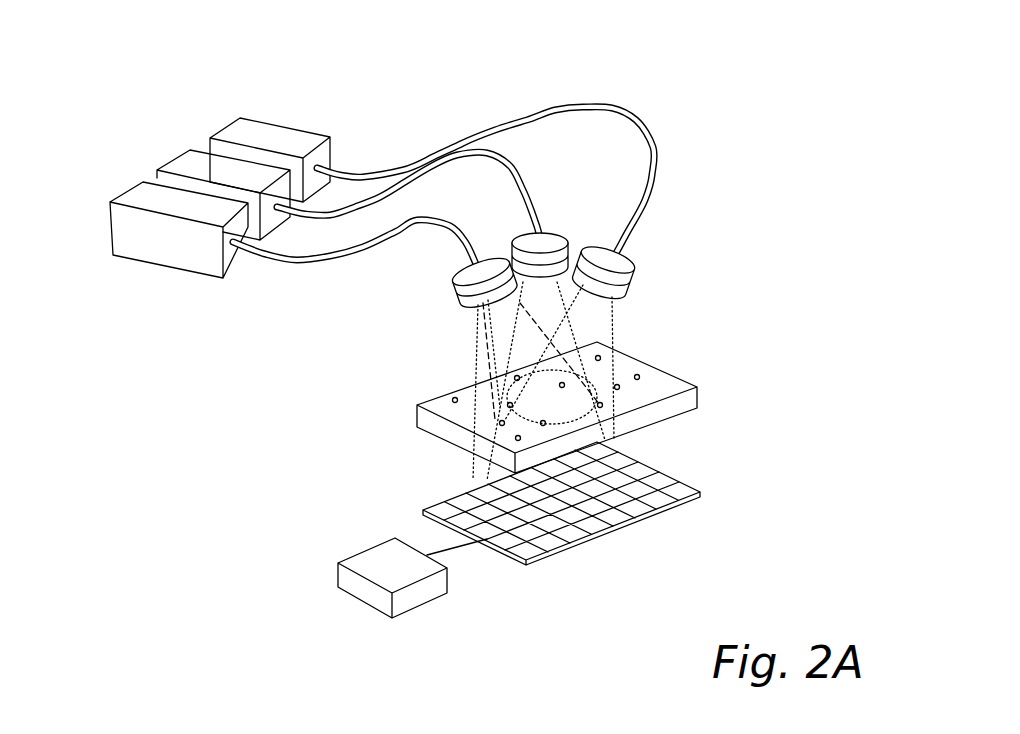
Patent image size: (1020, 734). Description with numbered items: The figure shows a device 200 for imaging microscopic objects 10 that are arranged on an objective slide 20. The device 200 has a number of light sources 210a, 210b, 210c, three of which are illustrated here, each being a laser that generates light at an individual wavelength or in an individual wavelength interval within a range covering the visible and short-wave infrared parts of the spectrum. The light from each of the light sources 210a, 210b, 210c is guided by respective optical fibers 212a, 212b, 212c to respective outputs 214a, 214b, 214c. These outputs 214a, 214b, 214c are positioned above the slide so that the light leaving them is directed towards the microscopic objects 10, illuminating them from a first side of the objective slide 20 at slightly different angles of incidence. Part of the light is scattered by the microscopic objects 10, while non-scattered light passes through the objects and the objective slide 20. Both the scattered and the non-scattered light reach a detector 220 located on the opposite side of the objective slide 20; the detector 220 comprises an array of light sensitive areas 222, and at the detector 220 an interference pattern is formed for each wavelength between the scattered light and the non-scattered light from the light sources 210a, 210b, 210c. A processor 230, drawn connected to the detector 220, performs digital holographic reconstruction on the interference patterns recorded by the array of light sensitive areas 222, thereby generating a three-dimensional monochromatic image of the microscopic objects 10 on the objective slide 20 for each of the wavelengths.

The device for imaging microscopic objects 200 is at (730, 121).
The light source 210a is at (170, 240).
The light source 210b is at (182, 168).
The light source 210c is at (237, 131).
The optical fiber 212a is at (317, 264).
The optical fiber 212b is at (392, 192).
The optical fiber 212c is at (475, 136).
The output 214a is at (480, 290).
The output 214b is at (577, 252).
The output 214c is at (607, 297).
The microscopic objects 10 is at (505, 373).
The objective slide 20 is at (658, 411).
The detector 220 is at (603, 531).
The array of light sensitive areas 222 is at (561, 535).
The processor 230 is at (423, 597).